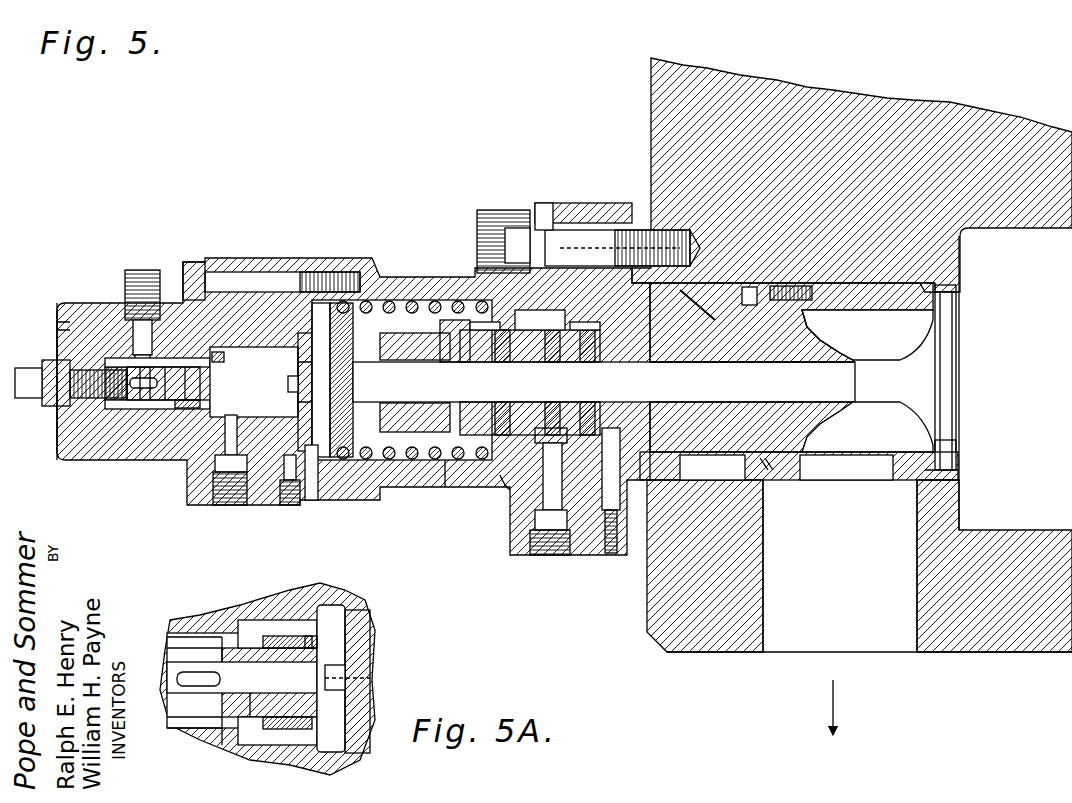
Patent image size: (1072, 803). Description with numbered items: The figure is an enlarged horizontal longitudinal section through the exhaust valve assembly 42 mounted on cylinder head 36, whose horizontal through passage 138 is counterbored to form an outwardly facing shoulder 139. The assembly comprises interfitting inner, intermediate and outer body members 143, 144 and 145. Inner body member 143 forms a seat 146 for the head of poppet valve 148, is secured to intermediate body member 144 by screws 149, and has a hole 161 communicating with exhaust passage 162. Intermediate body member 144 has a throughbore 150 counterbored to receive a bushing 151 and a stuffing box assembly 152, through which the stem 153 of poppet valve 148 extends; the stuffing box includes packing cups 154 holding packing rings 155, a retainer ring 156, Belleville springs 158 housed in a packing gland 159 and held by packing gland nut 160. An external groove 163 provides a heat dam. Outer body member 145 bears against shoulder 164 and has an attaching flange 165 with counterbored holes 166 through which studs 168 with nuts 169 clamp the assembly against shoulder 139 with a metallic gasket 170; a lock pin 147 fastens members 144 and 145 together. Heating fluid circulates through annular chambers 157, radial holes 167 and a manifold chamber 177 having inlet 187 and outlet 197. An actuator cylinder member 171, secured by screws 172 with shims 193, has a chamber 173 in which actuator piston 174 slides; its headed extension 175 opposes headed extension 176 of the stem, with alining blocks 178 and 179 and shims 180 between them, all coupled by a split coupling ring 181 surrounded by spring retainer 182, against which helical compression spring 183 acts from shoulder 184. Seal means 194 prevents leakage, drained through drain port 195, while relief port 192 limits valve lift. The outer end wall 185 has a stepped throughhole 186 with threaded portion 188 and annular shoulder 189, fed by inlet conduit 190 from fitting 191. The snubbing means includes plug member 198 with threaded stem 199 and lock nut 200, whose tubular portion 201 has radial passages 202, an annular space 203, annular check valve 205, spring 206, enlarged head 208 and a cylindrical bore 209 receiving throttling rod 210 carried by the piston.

In FIG. 5, the cylinder head 36 is at (1040, 656).
In FIG. 5, the exhaust valve assembly 42 is at (284, 225).
In FIG. 5, the horizontal through passage 138 is at (952, 297).
In FIG. 5, the outwardly facing shoulder 139 is at (940, 284).
In FIG. 5, the inner body member 143 is at (890, 300).
In FIG. 5, the intermediate body member 144 is at (810, 333).
In FIG. 5, the outer body member 145 is at (412, 278).
In FIG. 5, the seat 146 is at (937, 446).
In FIG. 5, the lock pin 147 is at (605, 545).
In FIG. 5, the poppet valve 148 is at (950, 371).
In FIG. 5, the screws 149 is at (742, 293).
In FIG. 5, the throughbore 150 is at (760, 358).
In FIG. 5, the bushing 151 is at (838, 412).
In FIG. 5, the stuffing box assembly 152 is at (612, 402).
In FIG. 5, the stem 153 is at (752, 374).
In FIG. 5, the packing cup 154 is at (588, 365).
In FIG. 5, the packing rings 155 is at (600, 360).
In FIG. 5, the retainer ring 156 is at (500, 348).
In FIG. 5, the annular chambers 157 is at (512, 332).
In FIG. 5, the Belleville springs 158 is at (470, 350).
In FIG. 5, the packing gland 159 is at (445, 345).
In FIG. 5, the packing gland nut 160 is at (427, 420).
In FIG. 5, the hole 161 is at (805, 470).
In FIG. 5, the exhaust passage 162 is at (768, 600).
In FIG. 5, the external groove 163 is at (735, 305).
In FIG. 5, the shoulder 164 is at (662, 456).
In FIG. 5, the attaching flange 165 is at (586, 204).
In FIG. 5, the counterbored through holes 166 is at (542, 212).
In FIG. 5, the radial holes 167 is at (520, 326).
In FIG. 5, the stud 168 is at (620, 228).
In FIG. 5, the nut 169 is at (490, 210).
In FIG. 5, the metallic gasket 170 is at (945, 478).
In FIG. 5, the actuator cylinder member 171 is at (228, 260).
In FIG. 5, the screws 172 is at (262, 272).
In FIG. 5, the chamber 173 is at (298, 347).
In FIG. 5A, the chamber 173 is at (362, 630).
In FIG. 5, the actuator piston 174 is at (254, 382).
In FIG. 5A, the actuator piston 174 is at (350, 640).
In FIG. 5, the headed extension 175 is at (328, 382).
In FIG. 5, the headed extension 176 is at (345, 365).
In FIG. 5, the manifold chamber 177 is at (548, 446).
In FIG. 5, the alining block 178 is at (330, 384).
In FIG. 5, the alining block 179 is at (356, 382).
In FIG. 5, the shims 180 is at (356, 395).
In FIG. 5, the split coupling ring 181 is at (312, 406).
In FIG. 5, the annular spring retainer 182 is at (375, 455).
In FIG. 5, the helical compression spring 183 is at (442, 462).
In FIG. 5, the shoulder 184 is at (500, 478).
In FIG. 5, the outer end wall 185 is at (100, 450).
In FIG. 5A, the outer end wall 185 is at (280, 600).
In FIG. 5, the stepped throughhole 186 is at (148, 403).
In FIG. 5A, the stepped throughhole 186 is at (175, 728).
In FIG. 5, the inlet 187 is at (532, 512).
In FIG. 5, the internally threaded portion 188 is at (57, 322).
In FIG. 5, the annular shoulder 189 is at (160, 405).
In FIG. 5A, the annular shoulder 189 is at (215, 745).
In FIG. 5, the inlet conduit 190 is at (120, 365).
In FIG. 5A, the inlet conduit 190 is at (245, 672).
In FIG. 5, the fitting 191 is at (140, 272).
In FIG. 5, the relief port 192 is at (230, 460).
In FIG. 5, the shims 193 is at (312, 500).
In FIG. 5, the seal means 194 is at (290, 381).
In FIG. 5, the drain port 195 is at (290, 490).
In FIG. 5, the outlet 197 is at (562, 247).
In FIG. 5, the plug member 198 is at (95, 340).
In FIG. 5A, the plug member 198 is at (172, 650).
In FIG. 5, the threaded stem portion 199 is at (62, 400).
In FIG. 5, the lock nut 200 is at (48, 362).
In FIG. 5, the tubular portion 201 is at (178, 405).
In FIG. 5A, the tubular portion 201 is at (250, 710).
In FIG. 5, the radial passages 202 is at (133, 402).
In FIG. 5A, the radial passages 202 is at (172, 680).
In FIG. 5, the annular space 203 is at (140, 405).
In FIG. 5A, the annular space 203 is at (170, 637).
In FIG. 5, the annular check valve 205 is at (172, 300).
In FIG. 5A, the annular check valve 205 is at (265, 630).
In FIG. 5, the helical compression spring 206 is at (180, 407).
In FIG. 5A, the helical compression spring 206 is at (278, 725).
In FIG. 5, the enlarged head 208 is at (215, 357).
In FIG. 5A, the enlarged head 208 is at (318, 640).
In FIG. 5, the cylindrical bore 209 is at (158, 381).
In FIG. 5A, the cylindrical bore 209 is at (269, 682).
In FIG. 5, the throttling rod 210 is at (212, 392).
In FIG. 5A, the throttling rod 210 is at (345, 668).